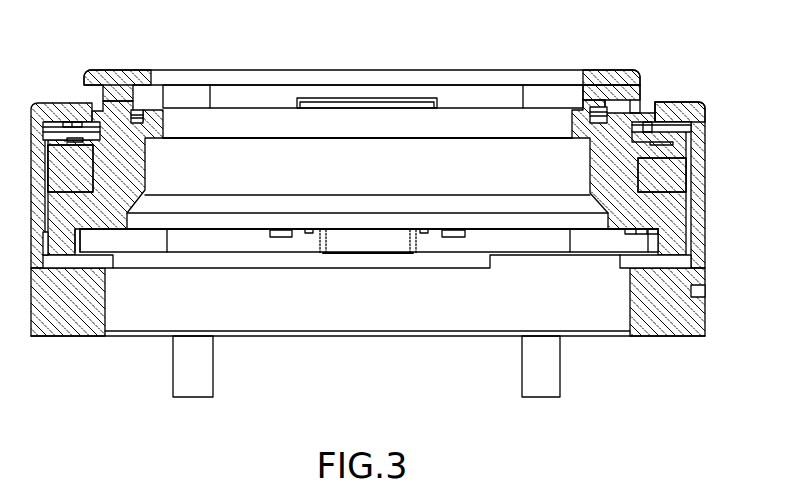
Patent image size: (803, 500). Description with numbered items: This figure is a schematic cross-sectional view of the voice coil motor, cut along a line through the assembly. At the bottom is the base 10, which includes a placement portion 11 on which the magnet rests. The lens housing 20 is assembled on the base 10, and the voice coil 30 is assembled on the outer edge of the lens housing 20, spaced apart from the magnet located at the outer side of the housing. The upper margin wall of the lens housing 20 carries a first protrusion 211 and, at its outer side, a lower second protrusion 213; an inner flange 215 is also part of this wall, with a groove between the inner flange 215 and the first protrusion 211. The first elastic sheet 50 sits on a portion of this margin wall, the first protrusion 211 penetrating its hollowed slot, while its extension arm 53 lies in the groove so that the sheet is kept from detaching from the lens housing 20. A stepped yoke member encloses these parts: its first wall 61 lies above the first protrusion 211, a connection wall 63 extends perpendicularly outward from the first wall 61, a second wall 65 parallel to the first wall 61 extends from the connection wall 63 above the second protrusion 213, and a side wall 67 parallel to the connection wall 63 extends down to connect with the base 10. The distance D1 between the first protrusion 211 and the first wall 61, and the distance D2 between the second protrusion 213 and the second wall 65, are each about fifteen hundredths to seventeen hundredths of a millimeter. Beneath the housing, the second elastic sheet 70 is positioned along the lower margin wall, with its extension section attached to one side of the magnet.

The base 10 is at (680, 324).
The placement portion 11 is at (660, 261).
The lens housing 20 is at (697, 220).
The voice coil 30 is at (688, 184).
The first elastic sheet 50 is at (704, 125).
The extension arm 53 is at (140, 116).
The first wall 61 is at (628, 93).
The connection wall 63 is at (648, 105).
The second wall 65 is at (677, 106).
The side wall 67 is at (698, 292).
The second elastic sheet 70 is at (688, 239).
The first protrusion 211 is at (597, 78).
The second protrusion 213 is at (695, 146).
The inner flange 215 is at (163, 124).
The distance between the first protrusion and the first wall D1 is at (113, 127).
The distance between the second protrusion and the second wall D2 is at (62, 158).